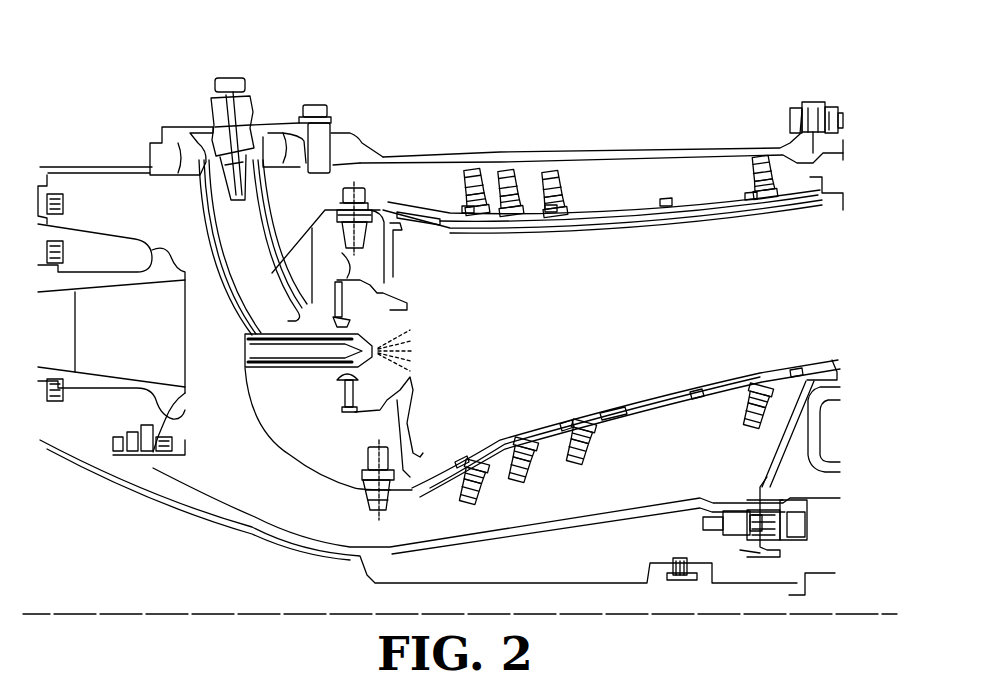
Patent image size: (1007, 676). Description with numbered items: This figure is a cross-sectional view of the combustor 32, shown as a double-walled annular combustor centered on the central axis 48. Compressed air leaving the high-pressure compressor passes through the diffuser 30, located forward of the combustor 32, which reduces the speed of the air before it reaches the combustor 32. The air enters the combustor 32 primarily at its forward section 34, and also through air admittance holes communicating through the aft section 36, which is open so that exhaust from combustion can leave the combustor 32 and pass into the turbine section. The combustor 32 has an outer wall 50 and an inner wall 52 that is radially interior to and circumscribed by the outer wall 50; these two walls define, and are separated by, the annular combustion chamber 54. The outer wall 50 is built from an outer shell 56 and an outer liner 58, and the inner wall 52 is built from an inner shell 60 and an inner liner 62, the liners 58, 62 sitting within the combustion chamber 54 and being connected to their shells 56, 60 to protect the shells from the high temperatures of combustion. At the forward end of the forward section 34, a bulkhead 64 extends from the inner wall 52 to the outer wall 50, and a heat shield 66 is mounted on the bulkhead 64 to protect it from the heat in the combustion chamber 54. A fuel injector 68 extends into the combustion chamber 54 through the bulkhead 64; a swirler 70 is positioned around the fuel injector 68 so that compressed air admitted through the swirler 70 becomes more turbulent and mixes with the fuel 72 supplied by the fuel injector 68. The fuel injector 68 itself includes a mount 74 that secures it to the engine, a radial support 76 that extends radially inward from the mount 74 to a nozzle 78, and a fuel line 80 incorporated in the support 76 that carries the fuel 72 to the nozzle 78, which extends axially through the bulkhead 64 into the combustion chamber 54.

The diffuser 30 is at (115, 350).
The combustor 32 is at (635, 122).
The forward section 34 is at (518, 363).
The aft section 36 is at (820, 308).
The central axis 48 is at (865, 613).
The outer wall 50 is at (635, 205).
The inner wall 52 is at (724, 420).
The combustion chamber 54 is at (590, 337).
The outer shell 56 is at (700, 208).
The outer liner 58 is at (678, 222).
The inner shell 60 is at (676, 418).
The inner liner 62 is at (674, 395).
The bulkhead 64 is at (400, 428).
The heat shield 66 is at (407, 433).
The fuel injector 68 is at (326, 88).
The swirler 70 is at (407, 305).
The fuel 72 is at (410, 348).
The mount 74 is at (192, 137).
The radial support 76 is at (205, 218).
The nozzle 78 is at (300, 363).
The fuel line 80 is at (237, 317).